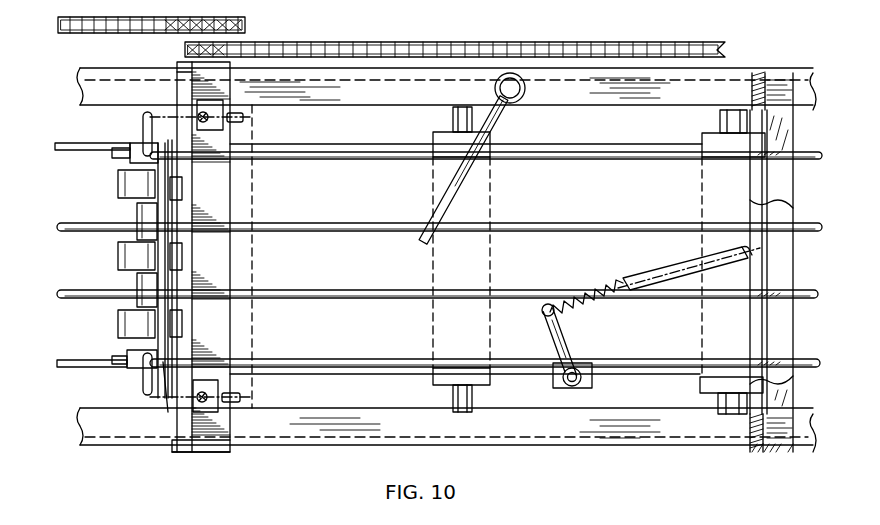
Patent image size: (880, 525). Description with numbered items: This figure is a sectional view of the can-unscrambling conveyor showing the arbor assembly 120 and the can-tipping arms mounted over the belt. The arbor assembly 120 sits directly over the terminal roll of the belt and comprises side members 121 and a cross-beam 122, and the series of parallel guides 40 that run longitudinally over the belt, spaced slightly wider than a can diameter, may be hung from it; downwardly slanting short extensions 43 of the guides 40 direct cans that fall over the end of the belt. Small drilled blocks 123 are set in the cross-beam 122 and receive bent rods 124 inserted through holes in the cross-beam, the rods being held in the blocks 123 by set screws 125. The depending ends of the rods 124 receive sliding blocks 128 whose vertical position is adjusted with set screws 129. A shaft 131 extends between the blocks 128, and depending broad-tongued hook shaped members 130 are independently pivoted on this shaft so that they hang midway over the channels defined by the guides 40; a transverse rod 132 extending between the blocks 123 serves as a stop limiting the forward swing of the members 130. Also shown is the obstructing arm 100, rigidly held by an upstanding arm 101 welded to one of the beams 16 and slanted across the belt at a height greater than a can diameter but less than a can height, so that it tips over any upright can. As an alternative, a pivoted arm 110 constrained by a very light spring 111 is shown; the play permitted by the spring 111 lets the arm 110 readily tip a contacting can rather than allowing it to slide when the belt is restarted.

The beam 16 is at (607, 100).
The parallel guide 40 is at (312, 223).
The short extension 43 is at (58, 227).
The obstructing arm 100 is at (453, 202).
The upstanding arm 101 is at (523, 100).
The pivoted arm 110 is at (565, 342).
The spring 111 is at (622, 280).
The arbor assembly 120 is at (156, 459).
The side member 121 is at (78, 67).
The cross-beam 122 is at (198, 264).
The drilled block 123 is at (218, 133).
The rod 124 is at (150, 117).
The set screw 125 is at (200, 115).
The sliding block 128 is at (140, 147).
The set screw 129 is at (127, 157).
The hook shaped member 130 is at (127, 190).
The shaft 131 is at (132, 200).
The transverse rod 132 is at (156, 397).